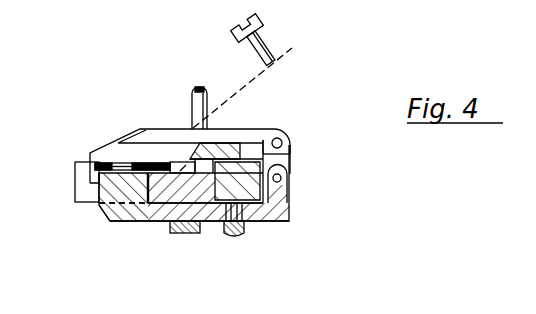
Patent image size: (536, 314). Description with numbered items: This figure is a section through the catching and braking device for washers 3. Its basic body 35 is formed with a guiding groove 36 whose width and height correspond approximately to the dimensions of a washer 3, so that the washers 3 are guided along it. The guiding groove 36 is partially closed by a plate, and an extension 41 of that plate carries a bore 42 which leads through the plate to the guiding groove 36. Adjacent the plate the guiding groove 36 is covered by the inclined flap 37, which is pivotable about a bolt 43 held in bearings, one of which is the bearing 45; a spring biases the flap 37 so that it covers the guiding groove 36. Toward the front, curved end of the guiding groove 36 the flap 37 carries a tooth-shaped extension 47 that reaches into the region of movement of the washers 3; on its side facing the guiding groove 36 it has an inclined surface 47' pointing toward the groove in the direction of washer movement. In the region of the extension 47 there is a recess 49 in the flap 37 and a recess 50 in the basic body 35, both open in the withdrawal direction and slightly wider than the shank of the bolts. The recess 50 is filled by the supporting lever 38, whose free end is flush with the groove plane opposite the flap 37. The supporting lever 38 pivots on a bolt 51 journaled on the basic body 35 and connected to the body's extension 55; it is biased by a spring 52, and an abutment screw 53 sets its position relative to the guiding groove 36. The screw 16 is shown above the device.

The washer 3 is at (97, 167).
The fastening screw 16 is at (272, 44).
The basic body 35 is at (217, 205).
The guiding groove 36 is at (160, 204).
The flap 37 is at (232, 135).
The supporting lever 38 is at (113, 213).
The extension 41 is at (191, 103).
The bore 42 is at (199, 86).
The bolt 43 is at (292, 136).
The bearing 45 is at (288, 152).
The tooth-shaped extension 47 is at (68, 166).
The inclined surface 47' is at (87, 220).
The recess 49 is at (158, 148).
The recess 50 is at (145, 190).
The bolt 51 is at (282, 178).
The spring 52 is at (188, 233).
The abutment screw 53 is at (243, 231).
The extension 55 is at (289, 193).